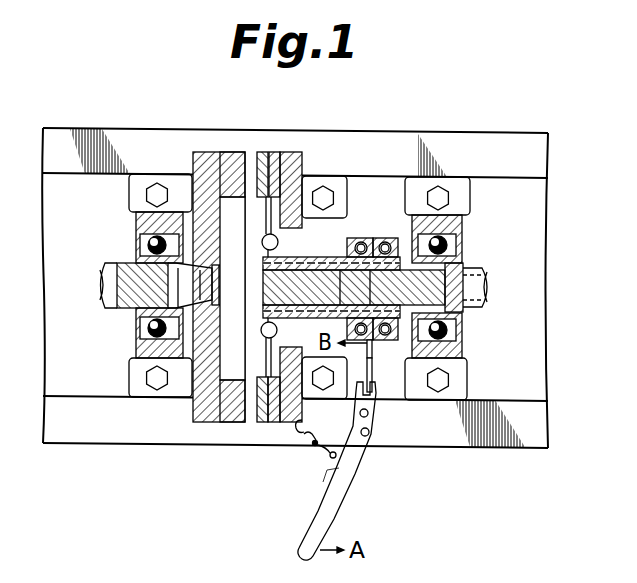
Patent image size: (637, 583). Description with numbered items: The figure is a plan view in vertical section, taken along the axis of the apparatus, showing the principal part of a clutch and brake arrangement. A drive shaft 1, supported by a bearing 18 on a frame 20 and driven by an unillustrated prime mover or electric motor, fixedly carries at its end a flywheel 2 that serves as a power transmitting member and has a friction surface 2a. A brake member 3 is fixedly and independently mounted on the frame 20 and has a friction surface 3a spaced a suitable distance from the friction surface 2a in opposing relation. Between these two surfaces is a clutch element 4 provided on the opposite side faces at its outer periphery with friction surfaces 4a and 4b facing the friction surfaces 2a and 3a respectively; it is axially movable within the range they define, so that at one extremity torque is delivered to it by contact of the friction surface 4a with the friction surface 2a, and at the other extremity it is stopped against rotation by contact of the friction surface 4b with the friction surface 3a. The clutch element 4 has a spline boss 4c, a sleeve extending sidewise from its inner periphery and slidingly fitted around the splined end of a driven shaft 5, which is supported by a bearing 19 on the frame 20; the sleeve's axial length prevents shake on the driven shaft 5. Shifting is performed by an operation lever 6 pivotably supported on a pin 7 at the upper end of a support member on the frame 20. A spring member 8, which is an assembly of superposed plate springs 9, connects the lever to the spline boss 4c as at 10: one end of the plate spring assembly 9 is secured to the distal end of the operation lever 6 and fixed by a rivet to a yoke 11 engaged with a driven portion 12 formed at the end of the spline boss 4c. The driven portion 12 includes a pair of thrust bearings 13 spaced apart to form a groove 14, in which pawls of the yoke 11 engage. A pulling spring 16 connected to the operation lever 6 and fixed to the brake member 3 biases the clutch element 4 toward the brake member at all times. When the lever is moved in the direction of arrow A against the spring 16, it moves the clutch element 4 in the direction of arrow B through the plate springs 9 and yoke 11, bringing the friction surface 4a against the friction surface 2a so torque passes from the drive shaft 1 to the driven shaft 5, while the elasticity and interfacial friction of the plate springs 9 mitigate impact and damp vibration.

The drive shaft 1 is at (110, 262).
The flywheel 2 is at (206, 152).
The friction surface 2a is at (232, 152).
The brake member 3 is at (303, 157).
The friction surface 3a is at (276, 152).
The clutch element 4 is at (264, 152).
The friction surface 4a is at (252, 430).
The friction surface 4b is at (278, 430).
The spline boss 4c is at (320, 257).
The driven shaft 5 is at (466, 318).
The operation lever 6 is at (343, 473).
The pin 7 is at (372, 416).
The spring member 8 is at (382, 367).
The plate springs 9 is at (370, 350).
The connection 10 is at (375, 287).
The yoke 11 is at (354, 287).
The driven portion 12 is at (386, 238).
The thrust bearings 13 is at (363, 238).
The groove 14 is at (381, 287).
The pulling spring 16 is at (316, 442).
The bearing 18 is at (136, 334).
The bearing 19 is at (460, 241).
The frame 20 is at (132, 445).